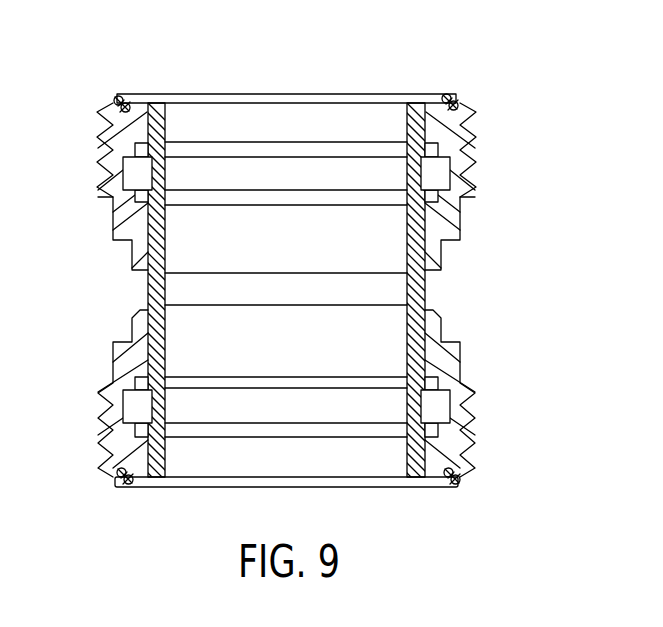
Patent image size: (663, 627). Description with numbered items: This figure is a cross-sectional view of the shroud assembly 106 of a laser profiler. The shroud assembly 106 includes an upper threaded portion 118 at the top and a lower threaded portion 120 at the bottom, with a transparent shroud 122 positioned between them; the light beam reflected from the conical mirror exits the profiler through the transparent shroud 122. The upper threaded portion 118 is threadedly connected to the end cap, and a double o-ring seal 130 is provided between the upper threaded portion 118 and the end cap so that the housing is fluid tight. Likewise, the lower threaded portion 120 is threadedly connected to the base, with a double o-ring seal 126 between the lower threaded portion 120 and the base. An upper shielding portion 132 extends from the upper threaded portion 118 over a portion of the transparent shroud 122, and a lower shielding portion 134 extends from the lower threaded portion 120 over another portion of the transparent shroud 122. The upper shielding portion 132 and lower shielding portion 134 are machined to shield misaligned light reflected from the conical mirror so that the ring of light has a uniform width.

The shroud assembly 106 is at (515, 79).
The upper threaded portion 118 is at (114, 157).
The lower threaded portion 120 is at (468, 415).
The transparent shroud 122 is at (427, 284).
The double o-ring seal 126 is at (455, 483).
The double o-ring seal 130 is at (446, 96).
The upper shielding portion 132 is at (132, 257).
The lower shielding portion 134 is at (132, 326).